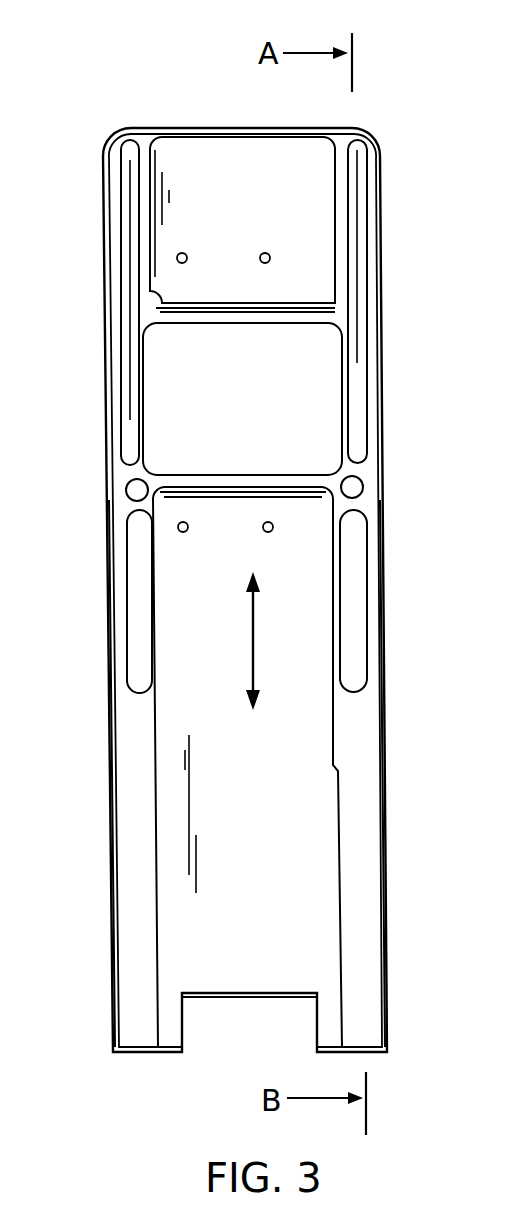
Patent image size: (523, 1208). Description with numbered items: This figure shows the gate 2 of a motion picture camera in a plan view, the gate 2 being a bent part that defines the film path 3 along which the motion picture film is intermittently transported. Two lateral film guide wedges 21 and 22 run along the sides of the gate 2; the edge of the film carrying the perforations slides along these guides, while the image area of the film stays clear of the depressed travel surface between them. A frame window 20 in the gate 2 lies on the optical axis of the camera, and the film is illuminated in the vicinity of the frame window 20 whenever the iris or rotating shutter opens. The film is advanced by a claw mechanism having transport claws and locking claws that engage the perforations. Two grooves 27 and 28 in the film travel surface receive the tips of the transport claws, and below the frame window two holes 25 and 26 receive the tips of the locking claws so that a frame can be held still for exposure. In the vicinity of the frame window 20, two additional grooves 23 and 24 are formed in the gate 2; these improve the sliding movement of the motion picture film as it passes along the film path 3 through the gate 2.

The gate 2 is at (105, 152).
The film path 3 is at (258, 627).
The frame window 20 is at (313, 388).
The lateral film guide wedge 21 is at (132, 890).
The lateral film guide wedge 22 is at (360, 828).
The additional groove 23 is at (127, 247).
The additional groove 24 is at (352, 212).
The hole 25 is at (134, 490).
The hole 26 is at (352, 487).
The groove 27 is at (138, 622).
The groove 28 is at (352, 618).